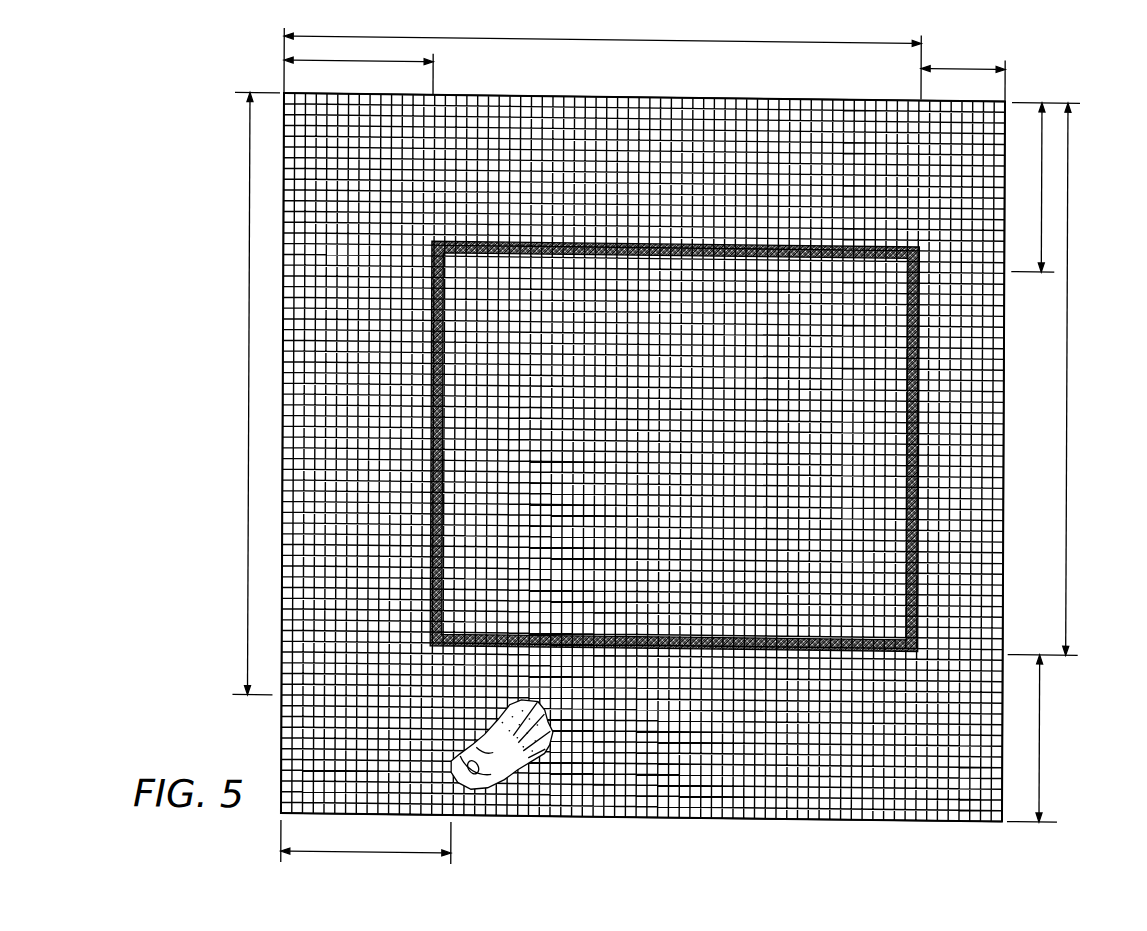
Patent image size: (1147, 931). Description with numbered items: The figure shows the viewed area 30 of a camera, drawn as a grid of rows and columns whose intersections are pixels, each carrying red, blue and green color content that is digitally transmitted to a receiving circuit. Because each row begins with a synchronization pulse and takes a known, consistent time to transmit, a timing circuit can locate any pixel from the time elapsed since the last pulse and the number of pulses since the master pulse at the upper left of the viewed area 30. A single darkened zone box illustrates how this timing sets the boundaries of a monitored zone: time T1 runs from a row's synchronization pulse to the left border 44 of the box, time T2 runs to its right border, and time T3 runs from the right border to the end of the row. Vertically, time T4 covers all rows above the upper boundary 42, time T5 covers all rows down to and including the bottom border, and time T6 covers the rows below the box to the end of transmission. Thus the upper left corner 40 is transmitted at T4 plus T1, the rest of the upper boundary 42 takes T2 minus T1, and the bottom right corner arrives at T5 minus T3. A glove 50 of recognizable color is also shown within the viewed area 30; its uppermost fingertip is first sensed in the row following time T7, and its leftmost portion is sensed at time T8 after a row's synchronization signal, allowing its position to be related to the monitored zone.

The viewed area 30 is at (668, 813).
The upper left corner 40 is at (432, 240).
The upper boundary 42 is at (691, 256).
The side border segment 44 is at (442, 518).
The glove 50 is at (506, 762).
The time T1 is at (343, 62).
The time T2 is at (597, 38).
The time T3 is at (940, 62).
The time T4 is at (1042, 188).
The time T5 is at (1068, 402).
The time T6 is at (1043, 730).
The time T7 is at (250, 385).
The time T8 is at (338, 851).